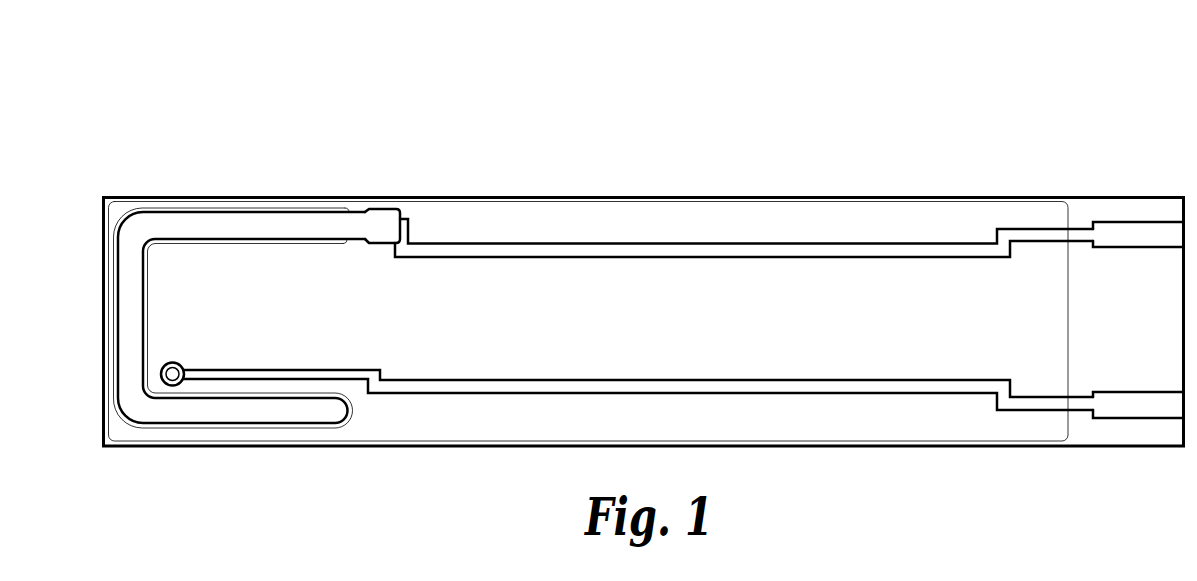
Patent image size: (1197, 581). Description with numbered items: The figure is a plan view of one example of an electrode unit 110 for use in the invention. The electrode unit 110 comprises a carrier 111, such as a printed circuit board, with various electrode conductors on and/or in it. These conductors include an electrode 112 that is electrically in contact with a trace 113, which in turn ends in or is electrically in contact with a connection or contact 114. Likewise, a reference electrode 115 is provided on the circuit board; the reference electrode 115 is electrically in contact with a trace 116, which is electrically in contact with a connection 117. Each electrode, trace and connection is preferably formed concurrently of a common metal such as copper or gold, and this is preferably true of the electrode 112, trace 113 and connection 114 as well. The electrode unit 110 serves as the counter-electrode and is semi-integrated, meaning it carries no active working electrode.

The electrode unit 110 is at (729, 95).
The carrier 111 is at (577, 195).
The electrode 112 is at (127, 332).
The trace 113 is at (840, 252).
The connection 114 is at (1140, 235).
The reference electrode 115 is at (172, 376).
The trace 116 is at (812, 387).
The connection 117 is at (1130, 403).